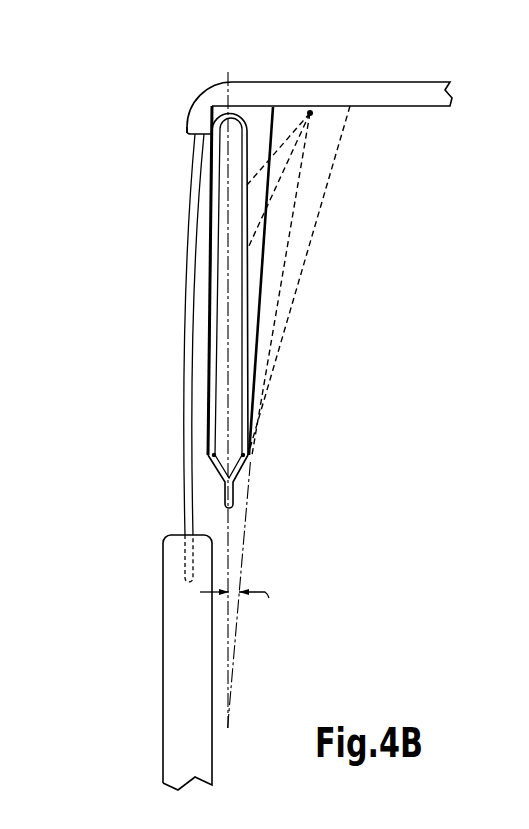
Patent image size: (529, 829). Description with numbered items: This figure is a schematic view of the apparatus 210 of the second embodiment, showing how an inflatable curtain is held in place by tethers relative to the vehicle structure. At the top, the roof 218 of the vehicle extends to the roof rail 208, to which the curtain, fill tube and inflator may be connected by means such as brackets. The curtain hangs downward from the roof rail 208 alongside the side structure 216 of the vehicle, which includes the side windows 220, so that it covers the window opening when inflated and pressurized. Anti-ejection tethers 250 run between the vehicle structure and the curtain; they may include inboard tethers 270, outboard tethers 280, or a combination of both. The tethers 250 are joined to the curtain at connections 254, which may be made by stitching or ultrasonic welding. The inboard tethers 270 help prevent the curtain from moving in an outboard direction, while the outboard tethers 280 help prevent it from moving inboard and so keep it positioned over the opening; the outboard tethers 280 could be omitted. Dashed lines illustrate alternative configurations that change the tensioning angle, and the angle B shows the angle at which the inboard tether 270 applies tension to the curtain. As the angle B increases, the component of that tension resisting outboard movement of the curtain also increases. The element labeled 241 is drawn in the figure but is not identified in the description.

The roof rail 208 is at (197, 118).
The roof 218 is at (262, 92).
The side windows 220 is at (187, 398).
The loop 241 is at (213, 330).
The tethers 250 is at (241, 280).
The outboard tethers 280 is at (207, 282).
The inboard tethers 270 is at (263, 277).
The connections 254 is at (212, 456).
The apparatus 210 is at (330, 393).
The side structure 216 is at (185, 677).
The angle B is at (242, 602).